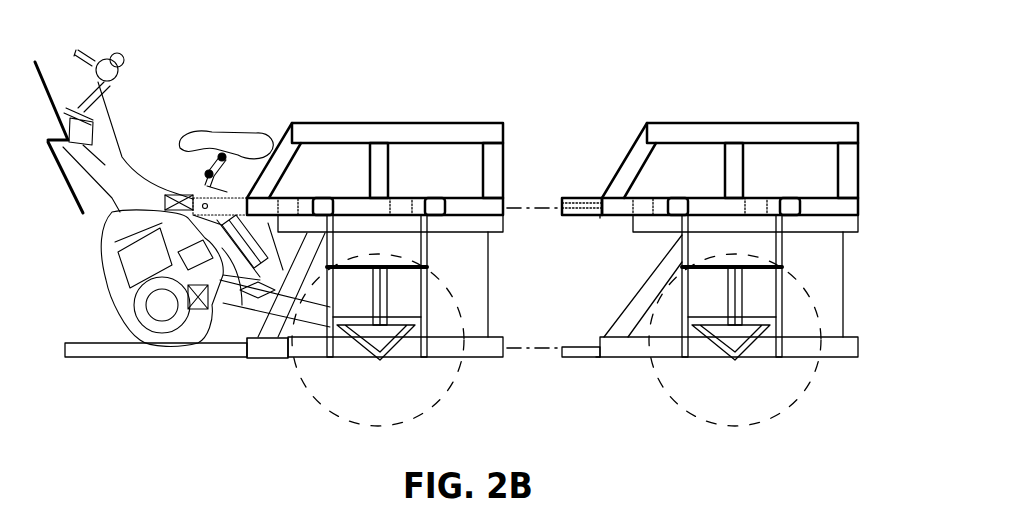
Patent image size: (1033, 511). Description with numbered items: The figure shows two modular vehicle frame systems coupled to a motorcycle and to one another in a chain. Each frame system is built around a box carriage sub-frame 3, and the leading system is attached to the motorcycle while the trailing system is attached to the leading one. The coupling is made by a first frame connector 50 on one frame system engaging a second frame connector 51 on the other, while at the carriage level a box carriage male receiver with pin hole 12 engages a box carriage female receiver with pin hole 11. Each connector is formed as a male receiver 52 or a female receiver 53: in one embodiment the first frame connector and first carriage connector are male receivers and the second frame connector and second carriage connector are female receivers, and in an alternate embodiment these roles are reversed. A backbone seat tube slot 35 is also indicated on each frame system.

The box carriage sub-frame 3 is at (507, 288).
The box carriage female receiver with pin hole 11 is at (860, 348).
The box carriage male receiver with pin hole 12 is at (592, 357).
The backbone seat tube slot 35 is at (567, 217).
The first frame connector 50 is at (583, 198).
The second frame connector 51 is at (858, 198).
The male receiver 52 is at (598, 218).
The female receiver 53 is at (858, 223).